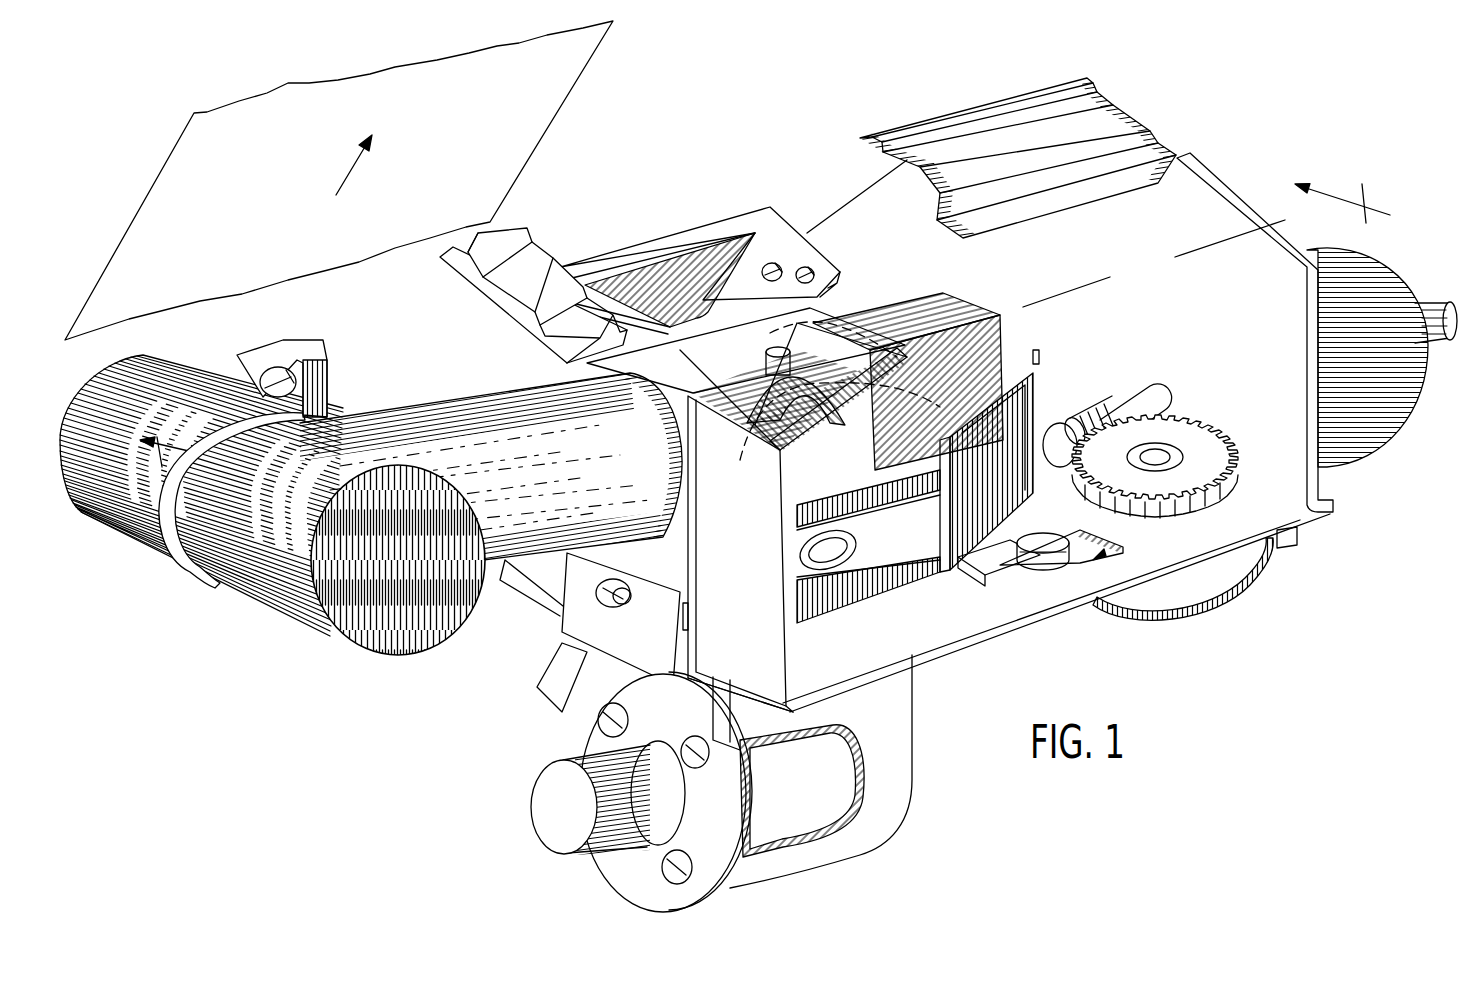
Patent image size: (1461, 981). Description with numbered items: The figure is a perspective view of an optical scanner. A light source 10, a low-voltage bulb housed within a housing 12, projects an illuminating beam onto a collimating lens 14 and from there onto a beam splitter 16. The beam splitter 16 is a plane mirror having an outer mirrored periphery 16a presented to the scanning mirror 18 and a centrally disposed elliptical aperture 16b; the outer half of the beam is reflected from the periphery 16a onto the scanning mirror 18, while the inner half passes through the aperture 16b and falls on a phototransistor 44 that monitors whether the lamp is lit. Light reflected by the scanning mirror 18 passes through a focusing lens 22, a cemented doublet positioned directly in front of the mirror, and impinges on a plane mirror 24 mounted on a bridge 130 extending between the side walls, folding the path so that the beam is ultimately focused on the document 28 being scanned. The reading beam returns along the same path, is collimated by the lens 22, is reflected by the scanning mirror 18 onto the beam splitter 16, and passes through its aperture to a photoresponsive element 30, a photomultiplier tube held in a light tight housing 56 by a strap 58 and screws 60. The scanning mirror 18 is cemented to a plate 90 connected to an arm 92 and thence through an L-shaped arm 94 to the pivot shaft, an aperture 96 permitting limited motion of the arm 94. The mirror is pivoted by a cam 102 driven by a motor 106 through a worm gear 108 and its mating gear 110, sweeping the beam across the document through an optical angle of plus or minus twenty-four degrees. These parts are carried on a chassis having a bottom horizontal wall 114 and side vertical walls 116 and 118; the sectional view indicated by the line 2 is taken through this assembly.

The section line / viewing direction 2 is at (776, 328).
The light source 10 is at (799, 793).
The housing 12 is at (898, 766).
The collimating lens 14 is at (845, 540).
The beam splitter 16 is at (857, 403).
The mirrored periphery 16a is at (886, 394).
The aperture 16b is at (797, 323).
The scanning mirror 18 is at (1020, 403).
The focusing lens 22 is at (977, 357).
The plane mirror 24 is at (746, 376).
The document 28 is at (426, 181).
The photoresponsive element 30 is at (400, 605).
The photosensitive element 44 is at (778, 348).
The light tight housing 56 is at (444, 398).
The strap 58 is at (193, 573).
The screws 60 is at (264, 378).
The plate 90 is at (1017, 488).
The arm 92 is at (1010, 543).
The L-shaped arm 94 is at (1023, 583).
The aperture 96 is at (1123, 543).
The cam 102 is at (1247, 570).
The motor 106 is at (1360, 440).
The worm gear 108 is at (1095, 410).
The mating gear 110 is at (1210, 430).
The bottom horizontal wall 114 is at (901, 641).
The side vertical wall 116 is at (1196, 316).
The side vertical wall 118 is at (757, 551).
The bridge 130 is at (690, 229).